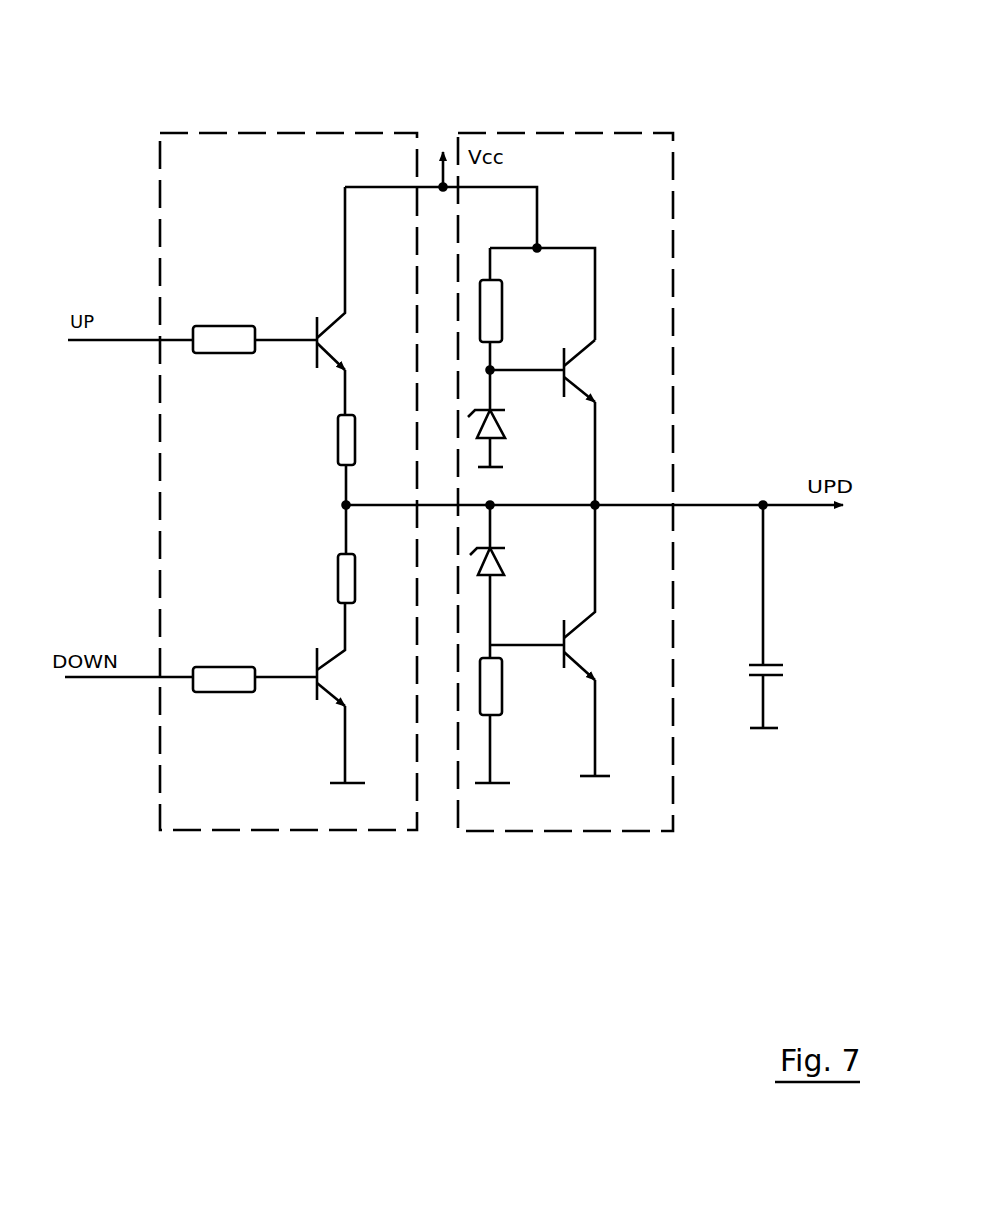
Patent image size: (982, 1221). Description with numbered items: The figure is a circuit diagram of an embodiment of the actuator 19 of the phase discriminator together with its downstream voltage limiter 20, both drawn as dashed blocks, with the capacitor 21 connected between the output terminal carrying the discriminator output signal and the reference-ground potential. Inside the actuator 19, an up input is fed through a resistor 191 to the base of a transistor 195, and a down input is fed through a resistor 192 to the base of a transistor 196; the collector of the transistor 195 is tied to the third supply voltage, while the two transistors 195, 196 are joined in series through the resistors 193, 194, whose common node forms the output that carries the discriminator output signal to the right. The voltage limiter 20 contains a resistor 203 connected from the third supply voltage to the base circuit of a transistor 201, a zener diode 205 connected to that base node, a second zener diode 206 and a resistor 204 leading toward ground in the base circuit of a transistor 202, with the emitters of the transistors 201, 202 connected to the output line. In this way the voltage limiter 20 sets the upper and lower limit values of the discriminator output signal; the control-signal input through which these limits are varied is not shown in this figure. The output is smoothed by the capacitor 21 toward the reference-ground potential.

The actuator 19 is at (241, 830).
The voltage limiter 20 is at (600, 831).
The capacitor 21 is at (793, 673).
The resistor 191 is at (223, 326).
The resistor 192 is at (143, 644).
The resistor 193 is at (338, 438).
The resistor 194 is at (338, 577).
The transistor 195 is at (351, 208).
The transistor 196 is at (363, 774).
The transistor 201 is at (604, 253).
The transistor 202 is at (582, 642).
The resistor 203 is at (524, 172).
The resistor 204 is at (519, 801).
The zener diode 205 is at (510, 429).
The zener diode 206 is at (505, 566).